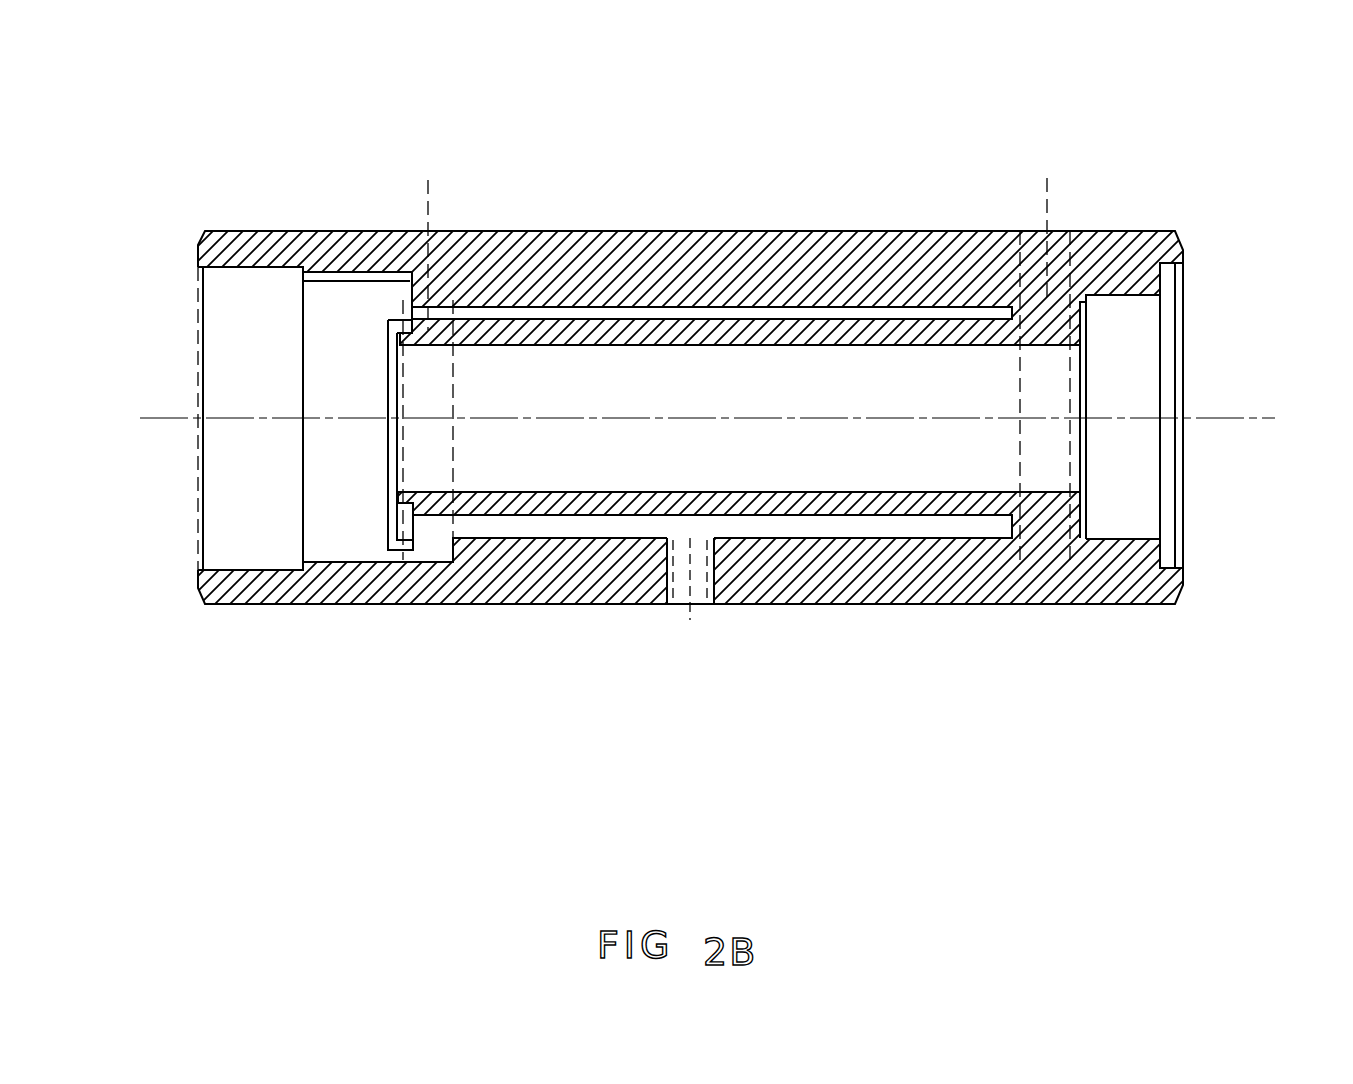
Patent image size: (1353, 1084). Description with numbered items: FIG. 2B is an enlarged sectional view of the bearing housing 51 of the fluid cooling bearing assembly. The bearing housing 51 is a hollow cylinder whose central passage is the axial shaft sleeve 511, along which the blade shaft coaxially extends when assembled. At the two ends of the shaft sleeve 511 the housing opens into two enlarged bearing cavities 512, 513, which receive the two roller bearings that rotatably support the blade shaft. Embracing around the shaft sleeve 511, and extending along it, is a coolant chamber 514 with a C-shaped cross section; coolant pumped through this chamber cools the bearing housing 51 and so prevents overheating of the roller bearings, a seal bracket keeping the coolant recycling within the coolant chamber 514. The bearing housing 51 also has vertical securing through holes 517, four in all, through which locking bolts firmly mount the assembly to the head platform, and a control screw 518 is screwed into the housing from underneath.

The bearing housing 51 is at (629, 262).
The shaft sleeve 511 is at (700, 442).
The bearing cavity 512 is at (337, 505).
The bearing cavity 513 is at (1124, 370).
The coolant chamber 514 is at (940, 525).
The vertical securing through hole 517 is at (428, 231).
The control screw 518 is at (694, 597).